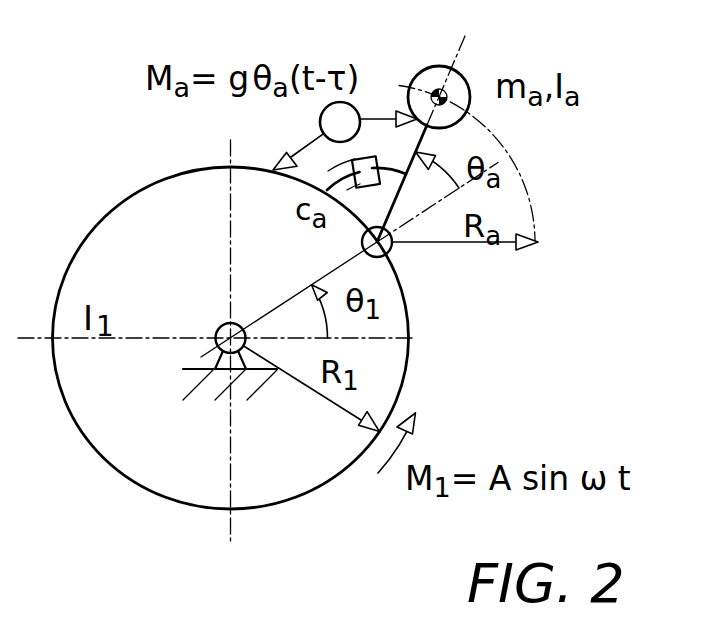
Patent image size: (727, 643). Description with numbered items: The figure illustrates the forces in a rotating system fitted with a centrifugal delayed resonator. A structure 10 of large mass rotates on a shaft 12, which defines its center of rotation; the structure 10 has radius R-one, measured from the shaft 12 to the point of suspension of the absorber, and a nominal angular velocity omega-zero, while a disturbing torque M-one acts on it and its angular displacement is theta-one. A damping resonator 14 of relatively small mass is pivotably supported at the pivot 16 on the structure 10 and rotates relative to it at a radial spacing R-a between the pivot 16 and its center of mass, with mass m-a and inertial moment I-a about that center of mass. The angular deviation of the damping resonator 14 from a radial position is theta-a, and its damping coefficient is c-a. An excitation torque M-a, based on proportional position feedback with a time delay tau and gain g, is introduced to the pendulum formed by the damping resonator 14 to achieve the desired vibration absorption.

The structure 10 is at (173, 498).
The shaft 12 is at (218, 329).
The damping resonator 14 is at (465, 71).
The pivot 16 is at (392, 251).